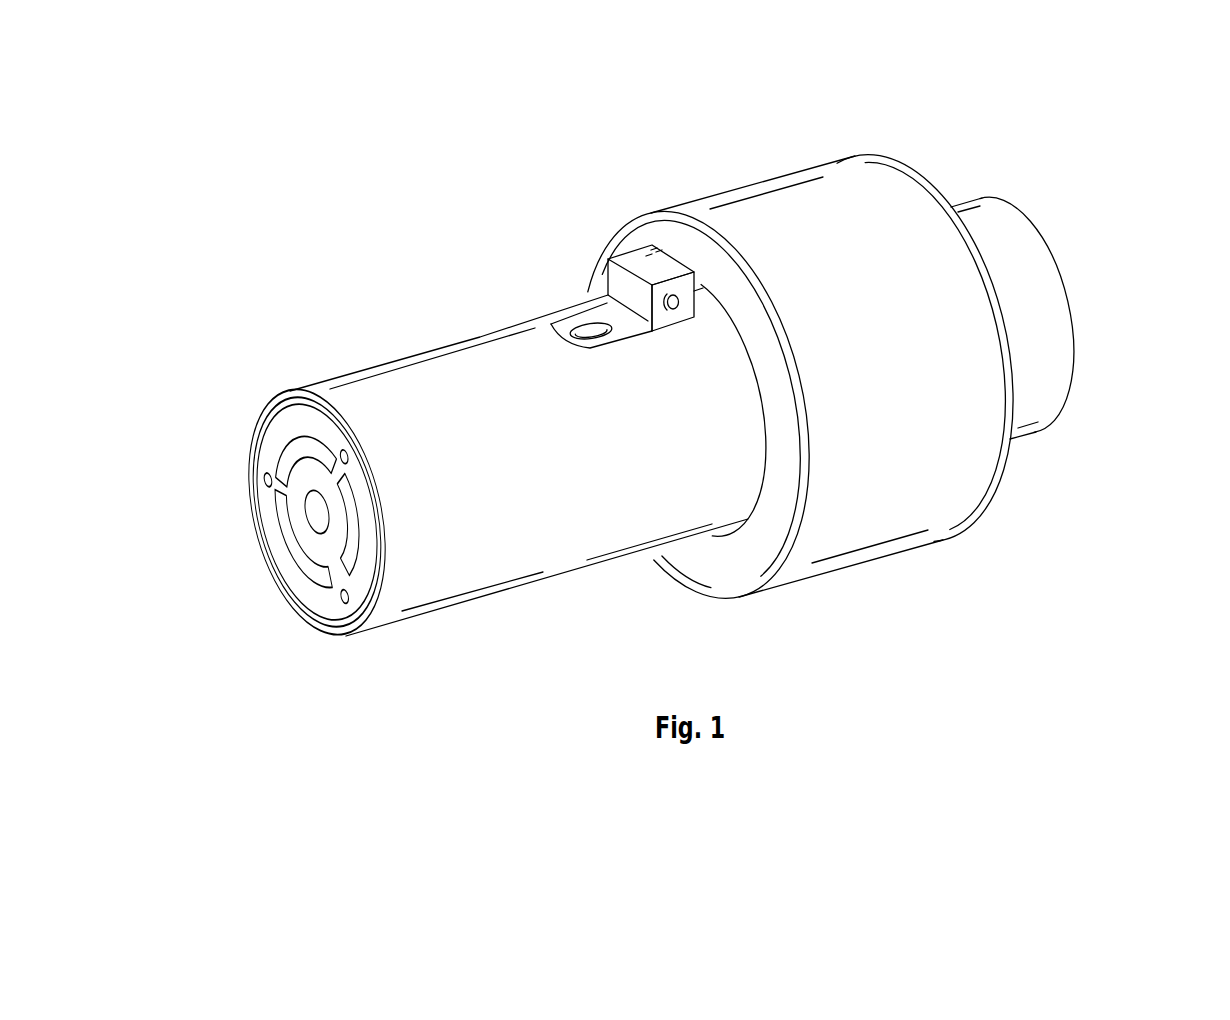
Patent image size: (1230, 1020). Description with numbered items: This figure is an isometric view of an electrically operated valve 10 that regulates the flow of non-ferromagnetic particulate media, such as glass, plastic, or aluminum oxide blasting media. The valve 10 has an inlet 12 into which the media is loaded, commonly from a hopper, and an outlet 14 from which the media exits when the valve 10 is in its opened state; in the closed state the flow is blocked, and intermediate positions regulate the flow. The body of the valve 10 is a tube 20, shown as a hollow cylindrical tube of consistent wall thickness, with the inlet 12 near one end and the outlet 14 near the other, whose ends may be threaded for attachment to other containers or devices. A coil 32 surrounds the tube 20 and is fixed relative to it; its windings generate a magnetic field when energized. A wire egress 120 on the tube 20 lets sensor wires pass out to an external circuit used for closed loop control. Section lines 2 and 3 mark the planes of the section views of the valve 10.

The electrically operated valve 10 is at (680, 365).
The inlet 12 is at (1088, 340).
The outlet 14 is at (256, 576).
The tube 20 is at (567, 548).
The coil 32 is at (882, 573).
The wire egress 120 is at (588, 332).
The section line 2- 2 is at (1133, 282).
The section line 3- 3 is at (1122, 292).